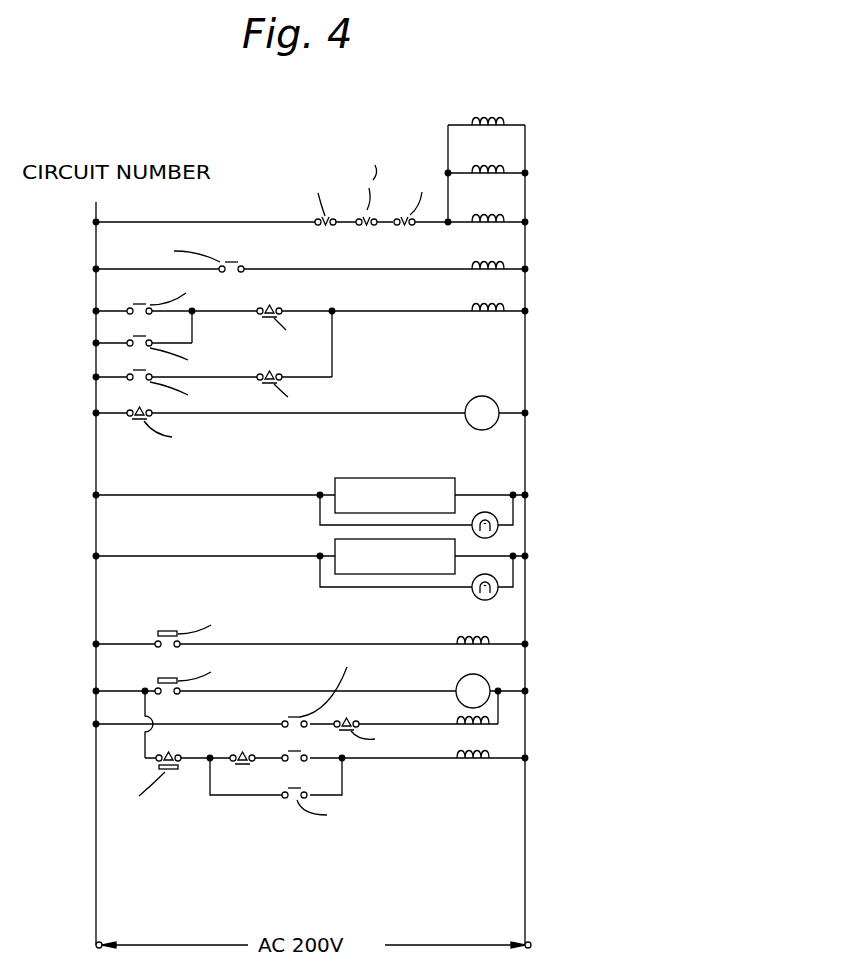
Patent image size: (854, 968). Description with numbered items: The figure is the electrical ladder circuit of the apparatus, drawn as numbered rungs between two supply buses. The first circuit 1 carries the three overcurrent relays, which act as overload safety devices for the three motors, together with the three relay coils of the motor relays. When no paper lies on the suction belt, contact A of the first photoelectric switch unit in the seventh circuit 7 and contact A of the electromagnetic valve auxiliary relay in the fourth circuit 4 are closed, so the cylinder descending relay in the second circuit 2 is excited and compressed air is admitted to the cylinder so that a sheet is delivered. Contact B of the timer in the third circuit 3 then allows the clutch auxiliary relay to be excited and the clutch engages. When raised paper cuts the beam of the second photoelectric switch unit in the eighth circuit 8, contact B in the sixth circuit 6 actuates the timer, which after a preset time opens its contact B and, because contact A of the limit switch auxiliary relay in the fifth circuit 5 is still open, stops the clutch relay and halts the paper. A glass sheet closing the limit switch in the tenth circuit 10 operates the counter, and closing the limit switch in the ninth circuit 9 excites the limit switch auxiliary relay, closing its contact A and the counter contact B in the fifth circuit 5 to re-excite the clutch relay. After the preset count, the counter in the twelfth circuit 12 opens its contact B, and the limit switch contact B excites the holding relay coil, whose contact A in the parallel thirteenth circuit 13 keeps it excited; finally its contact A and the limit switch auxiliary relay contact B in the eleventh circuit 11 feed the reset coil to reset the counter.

The first circuit 1 is at (286, 160).
The second circuit 2 is at (286, 258).
The third circuit 3 is at (286, 327).
The fourth circuit 4 is at (124, 343).
The fifth circuit 5 is at (188, 380).
The sixth circuit 6 is at (286, 417).
The seventh circuit 7 is at (286, 508).
The eighth circuit 8 is at (286, 569).
The ninth circuit 9 is at (286, 631).
The tenth circuit 10 is at (282, 706).
The eleventh circuit 11 is at (267, 702).
The twelfth circuit 12 is at (282, 769).
The thirteenth circuit 13 is at (189, 792).